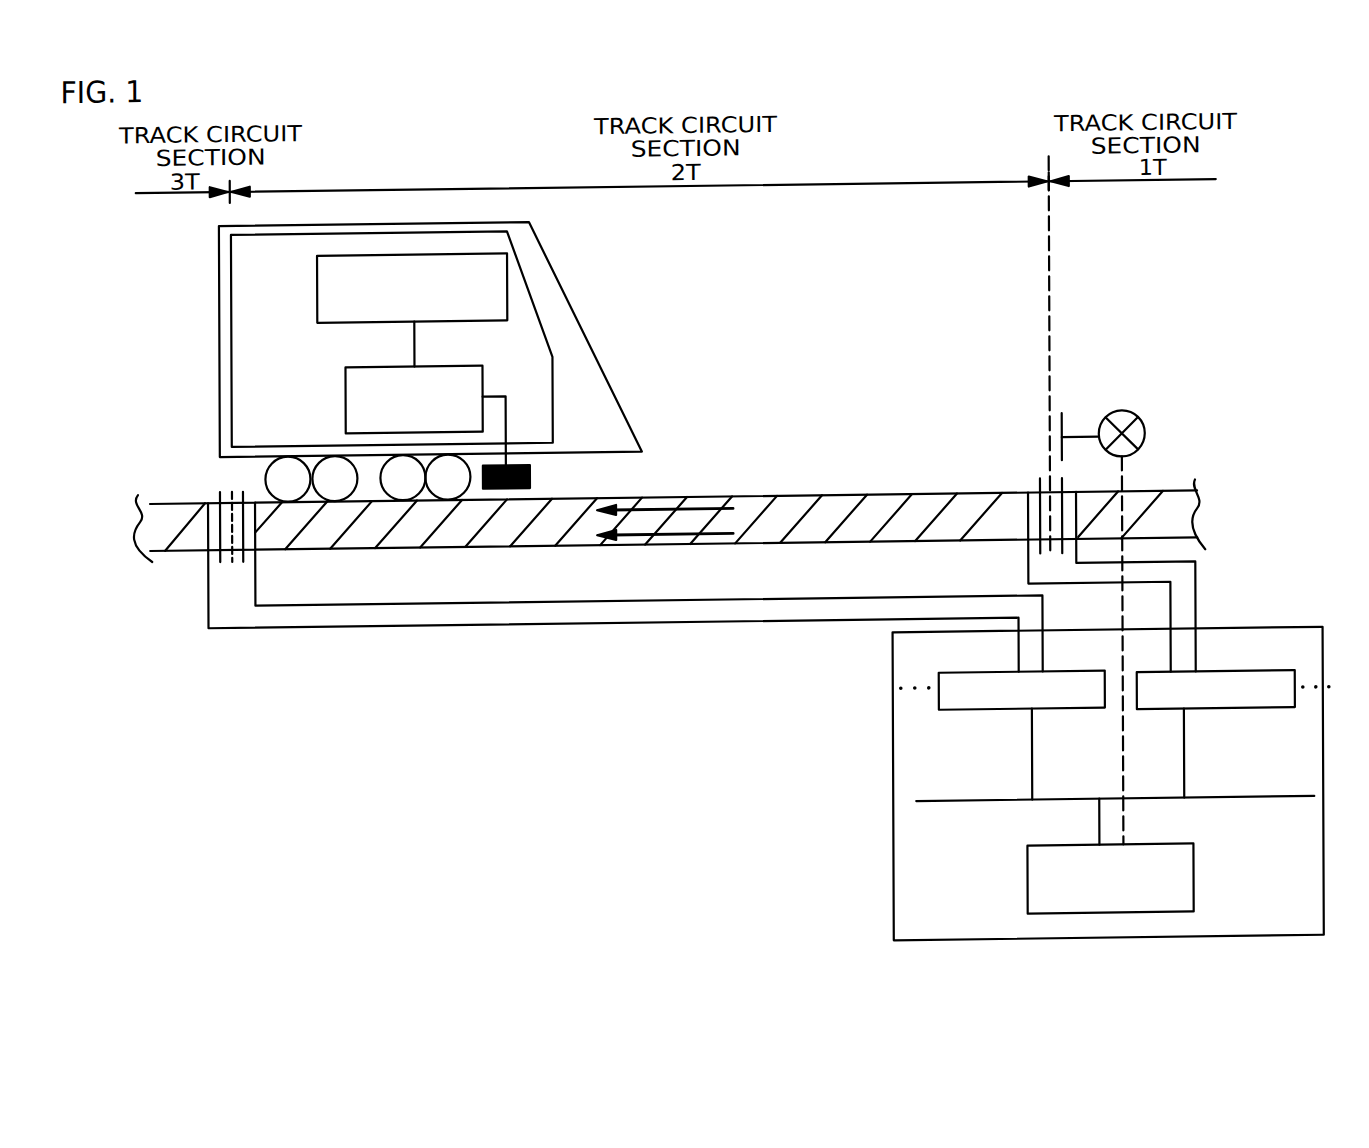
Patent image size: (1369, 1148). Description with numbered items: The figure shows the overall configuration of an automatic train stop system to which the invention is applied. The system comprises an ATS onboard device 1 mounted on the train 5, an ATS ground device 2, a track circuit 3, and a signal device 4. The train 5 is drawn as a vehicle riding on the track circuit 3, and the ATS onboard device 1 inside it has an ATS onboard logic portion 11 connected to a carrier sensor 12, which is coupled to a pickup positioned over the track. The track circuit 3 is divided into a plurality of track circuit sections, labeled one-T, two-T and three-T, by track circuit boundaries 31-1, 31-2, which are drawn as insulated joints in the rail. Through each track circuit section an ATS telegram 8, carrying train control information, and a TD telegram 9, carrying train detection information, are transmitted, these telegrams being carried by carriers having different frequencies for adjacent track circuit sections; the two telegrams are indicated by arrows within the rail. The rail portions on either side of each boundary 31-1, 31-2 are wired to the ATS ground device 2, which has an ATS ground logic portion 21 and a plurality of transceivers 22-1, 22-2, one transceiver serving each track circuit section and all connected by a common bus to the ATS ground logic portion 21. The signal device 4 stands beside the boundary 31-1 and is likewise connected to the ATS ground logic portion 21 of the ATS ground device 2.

The ATS onboard device 1 is at (555, 418).
The ATS ground device 2 is at (1282, 642).
The track circuit 3 is at (890, 504).
The signal device 4 is at (1121, 423).
The train 5 is at (220, 319).
The ATS telegram 8 is at (683, 544).
The TD telegram 9 is at (694, 514).
The ATS onboard logic portion 11 is at (318, 283).
The carrier sensor 12 is at (462, 370).
The ATS ground logic portion 21 is at (1192, 886).
The transceiver 22-1 is at (1248, 723).
The transceiver 22-2 is at (968, 721).
The track circuit boundary 31-1 is at (1040, 492).
The track circuit boundary 31-2 is at (220, 482).